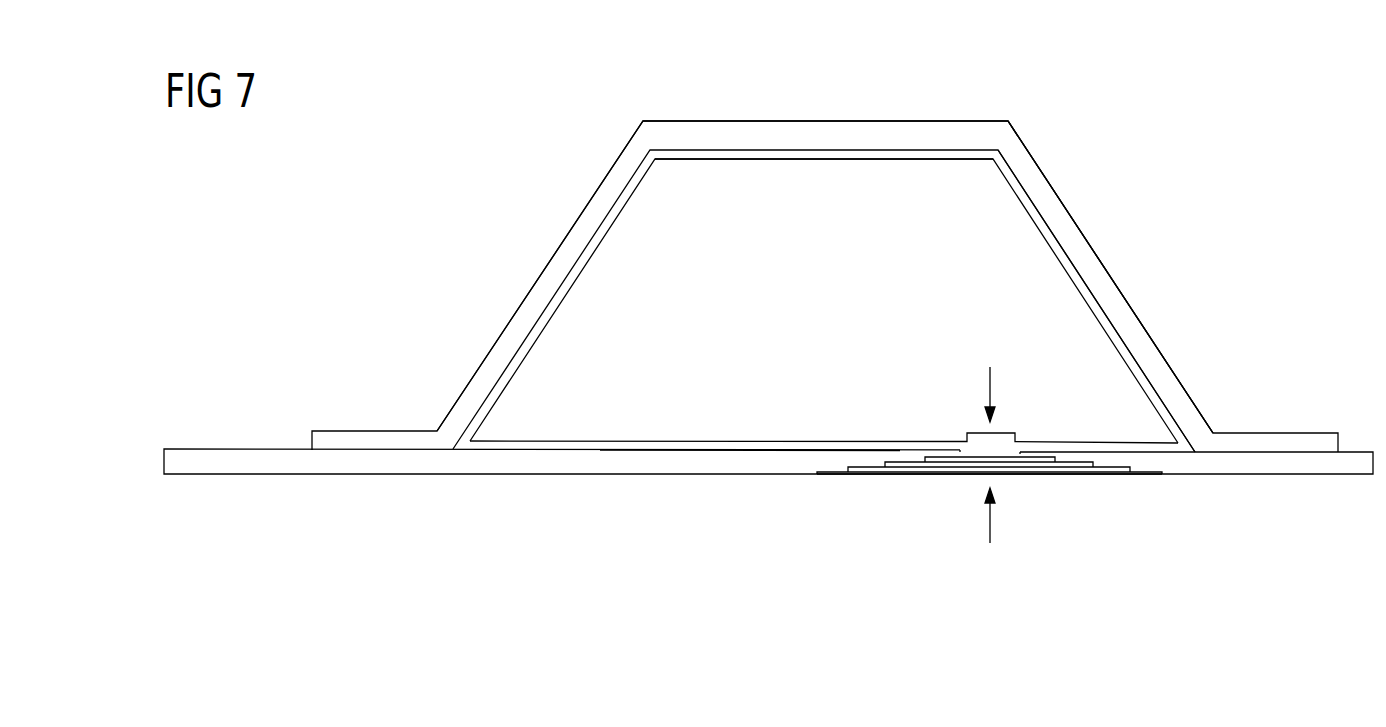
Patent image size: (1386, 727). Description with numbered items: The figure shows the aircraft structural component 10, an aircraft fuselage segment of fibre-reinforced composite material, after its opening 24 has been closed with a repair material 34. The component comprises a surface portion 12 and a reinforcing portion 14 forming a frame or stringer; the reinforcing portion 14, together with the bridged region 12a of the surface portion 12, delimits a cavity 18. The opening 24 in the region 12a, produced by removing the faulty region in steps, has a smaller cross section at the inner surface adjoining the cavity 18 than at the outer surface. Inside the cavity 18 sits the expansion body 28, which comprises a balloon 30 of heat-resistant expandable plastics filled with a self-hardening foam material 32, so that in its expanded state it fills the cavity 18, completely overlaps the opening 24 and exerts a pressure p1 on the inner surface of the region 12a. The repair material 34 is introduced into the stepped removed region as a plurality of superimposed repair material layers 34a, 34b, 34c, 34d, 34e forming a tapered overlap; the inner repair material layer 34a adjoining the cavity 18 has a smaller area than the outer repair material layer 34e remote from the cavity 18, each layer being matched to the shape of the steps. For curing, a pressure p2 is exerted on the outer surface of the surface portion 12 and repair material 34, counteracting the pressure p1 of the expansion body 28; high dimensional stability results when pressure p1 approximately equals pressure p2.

The aircraft structural component 10 is at (528, 168).
The surface portion 12 is at (385, 476).
The region of the surface portion 12a is at (720, 473).
The reinforcing portion 14 is at (1030, 170).
The cavity 18 is at (760, 183).
The opening 24 is at (897, 492).
The expansion body 28 is at (1142, 372).
The balloon 30 is at (665, 444).
The self-hardening foam material 32 is at (1015, 257).
The repair material 34 is at (1103, 552).
The inner repair material layer 34a is at (973, 458).
The repair material layer 34b is at (1001, 463).
The repair material layer 34c is at (1045, 470).
The repair material layer 34d is at (1098, 473).
The outer repair material layer 34e is at (1146, 476).
The pressure p1 is at (1003, 393).
The pressure p2 is at (976, 517).